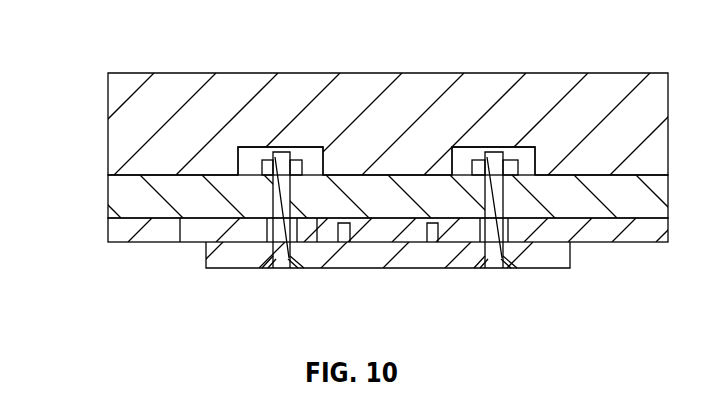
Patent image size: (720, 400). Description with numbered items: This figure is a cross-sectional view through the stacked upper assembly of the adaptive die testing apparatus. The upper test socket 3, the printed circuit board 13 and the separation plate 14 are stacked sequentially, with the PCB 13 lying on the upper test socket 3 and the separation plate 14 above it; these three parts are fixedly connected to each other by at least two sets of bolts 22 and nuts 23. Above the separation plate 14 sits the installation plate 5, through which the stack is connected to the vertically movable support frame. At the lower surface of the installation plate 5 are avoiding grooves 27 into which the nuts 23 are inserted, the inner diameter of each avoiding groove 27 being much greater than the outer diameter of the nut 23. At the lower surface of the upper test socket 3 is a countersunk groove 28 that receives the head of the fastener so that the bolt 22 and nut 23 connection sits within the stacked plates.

The installation plate 5 is at (150, 127).
The separation plate 14 is at (140, 193).
The printed circuit board 13 is at (157, 228).
The upper test socket 3 is at (360, 258).
The avoiding groove 27 is at (315, 153).
The nut 23 is at (517, 157).
The countersunk groove 28 is at (260, 263).
The bolt 22 is at (517, 260).